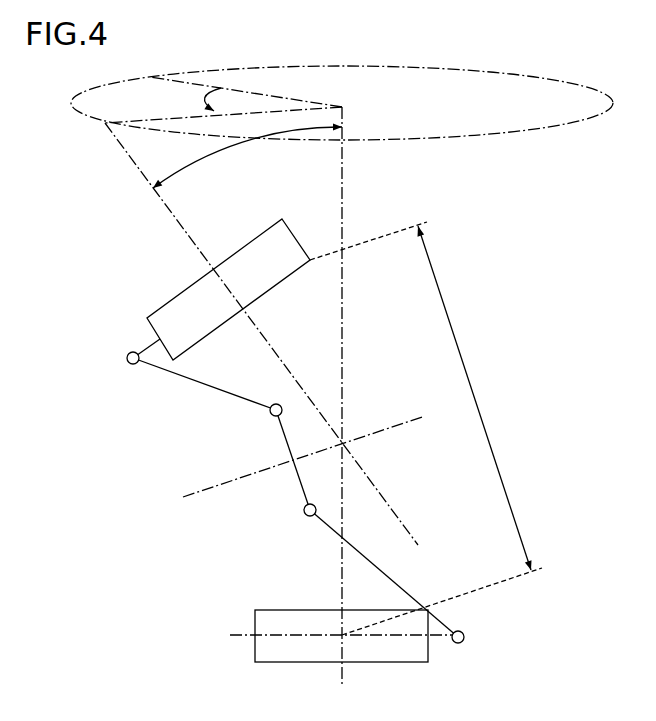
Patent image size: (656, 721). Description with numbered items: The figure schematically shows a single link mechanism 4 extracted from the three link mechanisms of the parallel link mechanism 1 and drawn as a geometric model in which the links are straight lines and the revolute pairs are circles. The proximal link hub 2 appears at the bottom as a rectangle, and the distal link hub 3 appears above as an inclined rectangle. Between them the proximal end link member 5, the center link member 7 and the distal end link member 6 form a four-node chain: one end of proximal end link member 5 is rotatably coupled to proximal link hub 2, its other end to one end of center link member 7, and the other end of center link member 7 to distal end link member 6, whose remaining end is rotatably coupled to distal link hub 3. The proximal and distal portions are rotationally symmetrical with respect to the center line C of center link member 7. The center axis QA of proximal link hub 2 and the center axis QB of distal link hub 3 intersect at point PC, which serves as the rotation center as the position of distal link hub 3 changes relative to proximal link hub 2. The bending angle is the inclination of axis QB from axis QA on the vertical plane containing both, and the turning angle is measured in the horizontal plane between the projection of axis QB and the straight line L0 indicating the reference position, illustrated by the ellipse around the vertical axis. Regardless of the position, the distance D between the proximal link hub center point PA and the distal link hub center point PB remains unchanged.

The parallel link mechanism 1 is at (463, 272).
The proximal link hub 2 is at (255, 631).
The distal link hub 3 is at (173, 297).
The link mechanism 4 is at (192, 455).
The proximal end link member 5 is at (387, 568).
The distal end link member 6 is at (203, 387).
The center link member 7 is at (298, 482).
The straight line indicating reference position of turning angle L0 is at (222, 87).
The proximal link hub center point PA is at (342, 635).
The distal link hub center point PB is at (228, 289).
The intersection point PC is at (344, 445).
The center axis of proximal link hub QA is at (342, 671).
The center axis of distal link hub QB is at (203, 258).
The center line C is at (382, 430).
The distance D is at (426, 428).